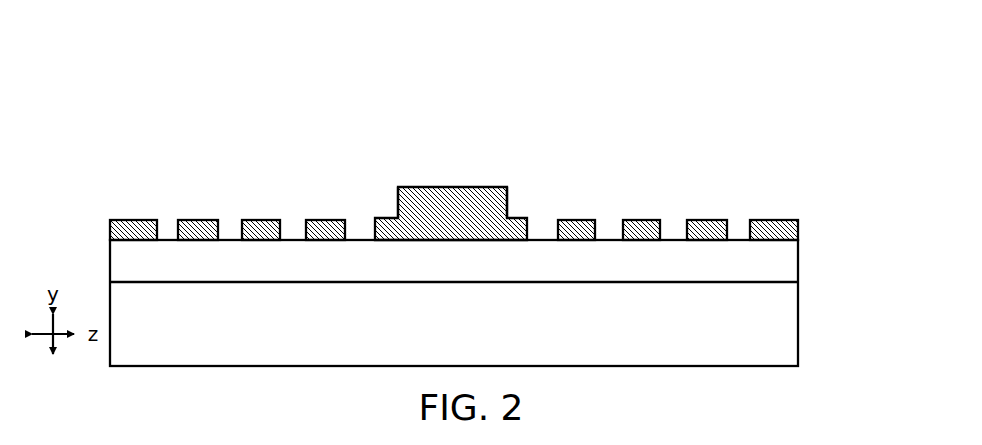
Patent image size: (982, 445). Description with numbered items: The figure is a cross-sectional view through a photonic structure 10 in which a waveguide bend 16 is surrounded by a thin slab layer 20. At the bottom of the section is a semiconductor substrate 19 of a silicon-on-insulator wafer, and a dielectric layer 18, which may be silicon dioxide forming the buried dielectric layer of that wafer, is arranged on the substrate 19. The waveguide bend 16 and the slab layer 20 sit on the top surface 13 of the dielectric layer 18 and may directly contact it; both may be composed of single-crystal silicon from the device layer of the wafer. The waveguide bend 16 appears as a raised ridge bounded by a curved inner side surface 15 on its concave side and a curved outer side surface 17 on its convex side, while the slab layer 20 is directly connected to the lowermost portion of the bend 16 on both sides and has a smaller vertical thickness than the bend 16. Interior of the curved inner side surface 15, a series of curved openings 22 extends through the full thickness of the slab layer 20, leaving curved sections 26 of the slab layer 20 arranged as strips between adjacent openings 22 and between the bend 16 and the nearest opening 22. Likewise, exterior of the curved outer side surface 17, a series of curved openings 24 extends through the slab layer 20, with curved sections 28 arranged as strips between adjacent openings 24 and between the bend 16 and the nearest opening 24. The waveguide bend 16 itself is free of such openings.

The structure 10 is at (122, 89).
The top surface 13 is at (780, 235).
The curved inner side surface 15 is at (398, 207).
The waveguide bend 16 is at (450, 203).
The curved outer side surface 17 is at (510, 205).
The dielectric layer 18 is at (775, 267).
The semiconductor substrate 19 is at (778, 338).
The slab layer 20 is at (128, 233).
The curved openings 22 is at (205, 103).
The curved openings 24 is at (531, 103).
The curved section 26 is at (195, 228).
The curved section 28 is at (577, 230).